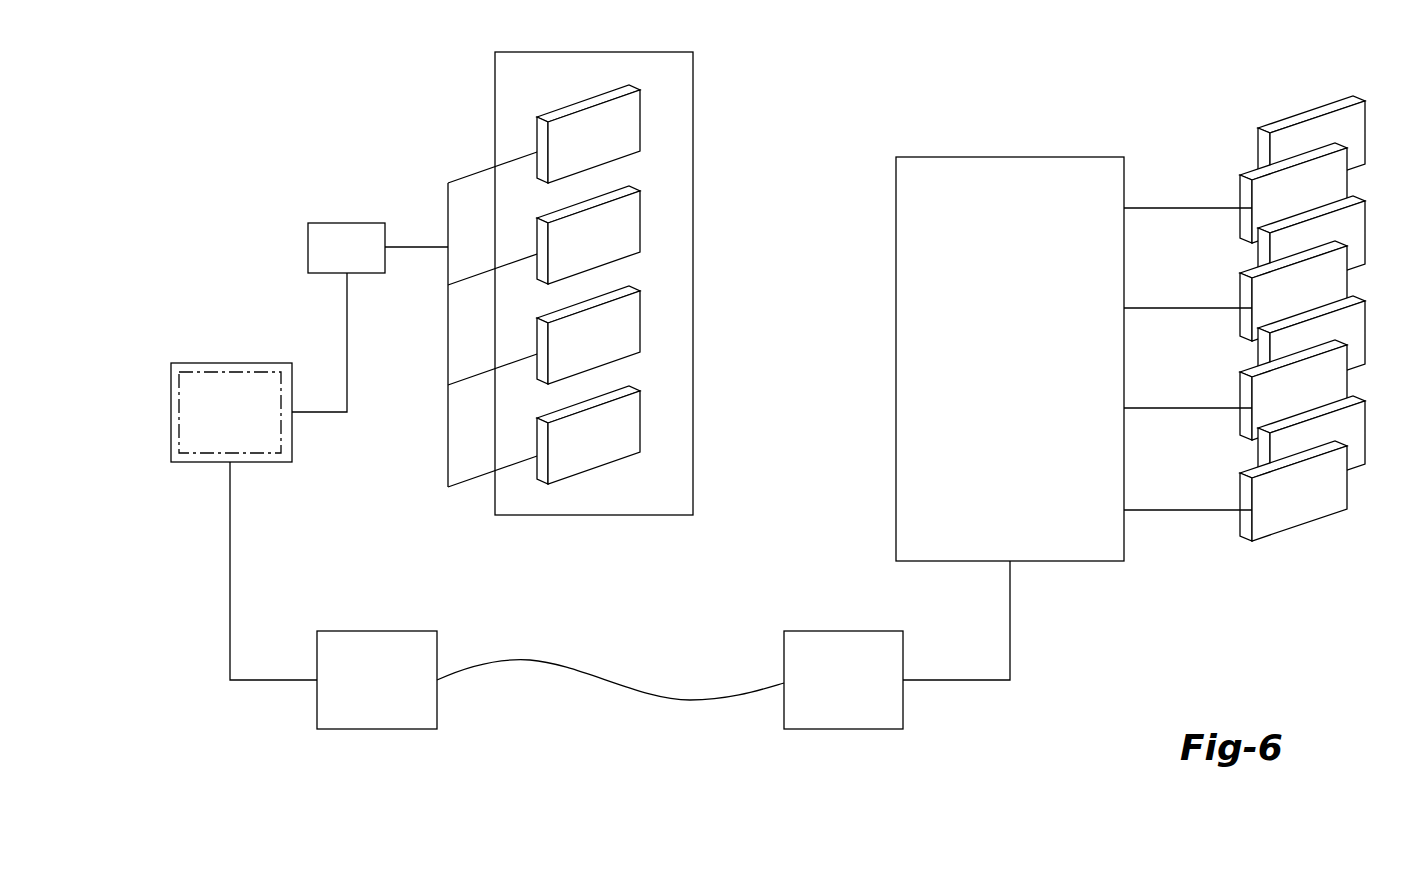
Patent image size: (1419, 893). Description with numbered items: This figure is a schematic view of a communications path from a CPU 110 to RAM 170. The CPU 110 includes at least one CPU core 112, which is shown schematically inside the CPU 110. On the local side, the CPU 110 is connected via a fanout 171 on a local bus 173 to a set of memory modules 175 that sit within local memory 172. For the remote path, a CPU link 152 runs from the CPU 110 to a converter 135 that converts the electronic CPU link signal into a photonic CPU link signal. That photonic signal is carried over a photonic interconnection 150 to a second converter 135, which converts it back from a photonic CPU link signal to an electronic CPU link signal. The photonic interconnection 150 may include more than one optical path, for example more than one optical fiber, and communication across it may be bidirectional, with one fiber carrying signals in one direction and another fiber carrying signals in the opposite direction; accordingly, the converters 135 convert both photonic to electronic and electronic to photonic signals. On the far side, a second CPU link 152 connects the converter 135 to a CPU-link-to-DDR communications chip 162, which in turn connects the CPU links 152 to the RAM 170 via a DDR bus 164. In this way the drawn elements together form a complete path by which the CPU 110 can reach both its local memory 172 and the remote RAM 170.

The CPU 110 is at (258, 468).
The CPU core 112 is at (232, 372).
The converter 135 is at (366, 686).
The photonic interconnection 150 is at (607, 677).
The CPU link 152 is at (230, 571).
The CPU-link-to-DDR communications chip 162 is at (999, 358).
The DDR bus 164 is at (1187, 207).
The RAM 170 is at (1302, 104).
The fanout 171 is at (331, 223).
The local memory 172 is at (693, 284).
The local bus 173 is at (446, 198).
The memory modules 175 is at (641, 117).